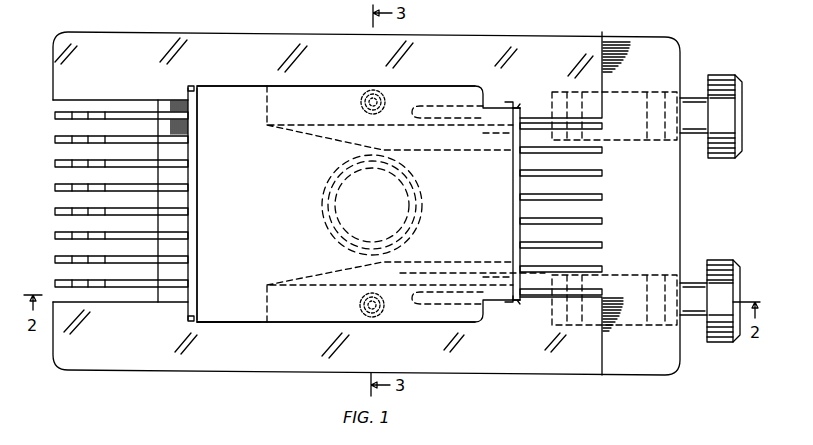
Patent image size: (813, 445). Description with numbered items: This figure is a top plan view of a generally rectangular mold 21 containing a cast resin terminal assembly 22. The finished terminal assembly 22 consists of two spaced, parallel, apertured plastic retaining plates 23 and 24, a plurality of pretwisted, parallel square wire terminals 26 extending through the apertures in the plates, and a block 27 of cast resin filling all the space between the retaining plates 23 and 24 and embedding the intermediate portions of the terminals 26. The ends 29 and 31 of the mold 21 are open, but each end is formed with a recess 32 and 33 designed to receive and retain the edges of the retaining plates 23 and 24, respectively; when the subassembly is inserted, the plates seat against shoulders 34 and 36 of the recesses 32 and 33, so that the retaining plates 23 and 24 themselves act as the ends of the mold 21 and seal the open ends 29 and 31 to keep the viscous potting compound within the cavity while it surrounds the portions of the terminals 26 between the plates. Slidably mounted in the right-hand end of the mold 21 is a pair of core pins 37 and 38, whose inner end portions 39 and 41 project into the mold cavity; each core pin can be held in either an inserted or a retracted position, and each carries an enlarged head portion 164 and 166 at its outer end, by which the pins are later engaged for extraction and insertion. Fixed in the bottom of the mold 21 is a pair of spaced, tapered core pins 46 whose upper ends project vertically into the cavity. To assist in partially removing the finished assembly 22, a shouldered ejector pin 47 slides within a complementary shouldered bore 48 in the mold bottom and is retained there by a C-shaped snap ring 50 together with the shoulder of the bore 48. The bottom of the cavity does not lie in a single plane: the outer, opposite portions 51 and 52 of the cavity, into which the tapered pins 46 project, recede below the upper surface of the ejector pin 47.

The mold 21 is at (684, 38).
The cast resin terminal assembly 22 is at (251, 78).
The retaining plate 23 is at (513, 173).
The retaining plate 24 is at (197, 160).
The square wire terminals 26 is at (58, 283).
The block of cast resin material 27 is at (233, 321).
The end of the mold 29 is at (603, 198).
The end of the mold 31 is at (175, 106).
The recess 32 is at (506, 305).
The recess 33 is at (191, 321).
The shoulder 34 is at (522, 302).
The shoulder 36 is at (182, 315).
The core pin 37 is at (695, 93).
The core pin 38 is at (690, 318).
The inner end portion 39 is at (457, 103).
The inner end portion 41 is at (455, 306).
The tapered core pins 46 is at (376, 317).
The ejector pin 47 is at (405, 224).
The shouldered bore 48 is at (322, 207).
The C-shaped snap ring 50 is at (418, 205).
The outer portion of the cavity 51 is at (303, 90).
The outer portion of the cavity 52 is at (317, 321).
The enlarged head portion 164 is at (725, 156).
The enlarged head portion 166 is at (727, 265).